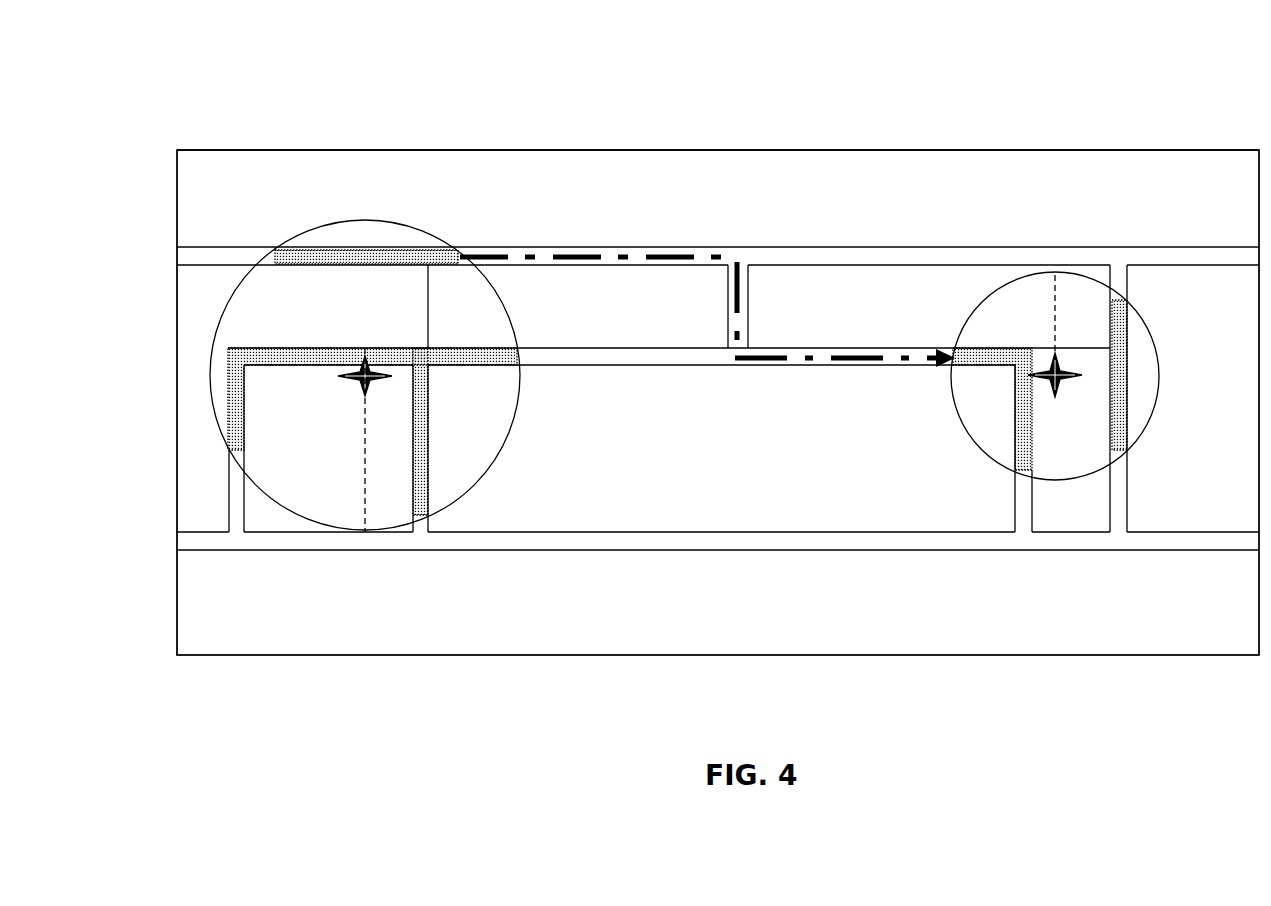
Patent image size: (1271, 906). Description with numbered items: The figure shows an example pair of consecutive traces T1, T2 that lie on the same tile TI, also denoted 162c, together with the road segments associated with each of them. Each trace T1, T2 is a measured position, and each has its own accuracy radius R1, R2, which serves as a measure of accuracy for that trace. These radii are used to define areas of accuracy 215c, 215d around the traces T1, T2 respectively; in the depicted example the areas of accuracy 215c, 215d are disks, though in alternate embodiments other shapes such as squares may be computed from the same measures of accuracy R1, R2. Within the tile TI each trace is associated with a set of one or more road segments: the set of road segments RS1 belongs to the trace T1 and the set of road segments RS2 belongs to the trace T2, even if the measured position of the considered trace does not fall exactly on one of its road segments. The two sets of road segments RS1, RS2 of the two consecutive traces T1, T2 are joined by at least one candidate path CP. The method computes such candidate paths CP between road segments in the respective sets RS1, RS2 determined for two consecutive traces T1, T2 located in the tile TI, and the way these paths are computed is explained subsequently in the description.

The tile 162c is at (1055, 150).
The tile TI is at (715, 148).
The candidate path CP is at (602, 250).
The area of accuracy 215c is at (435, 237).
The area of accuracy 215d is at (1147, 328).
The set of road segments RS1 is at (465, 348).
The set of road segments RS2 is at (1118, 453).
The trace T1 is at (340, 377).
The trace T2 is at (1053, 400).
The accuracy radius R1 is at (363, 503).
The accuracy radius R2 is at (1055, 297).